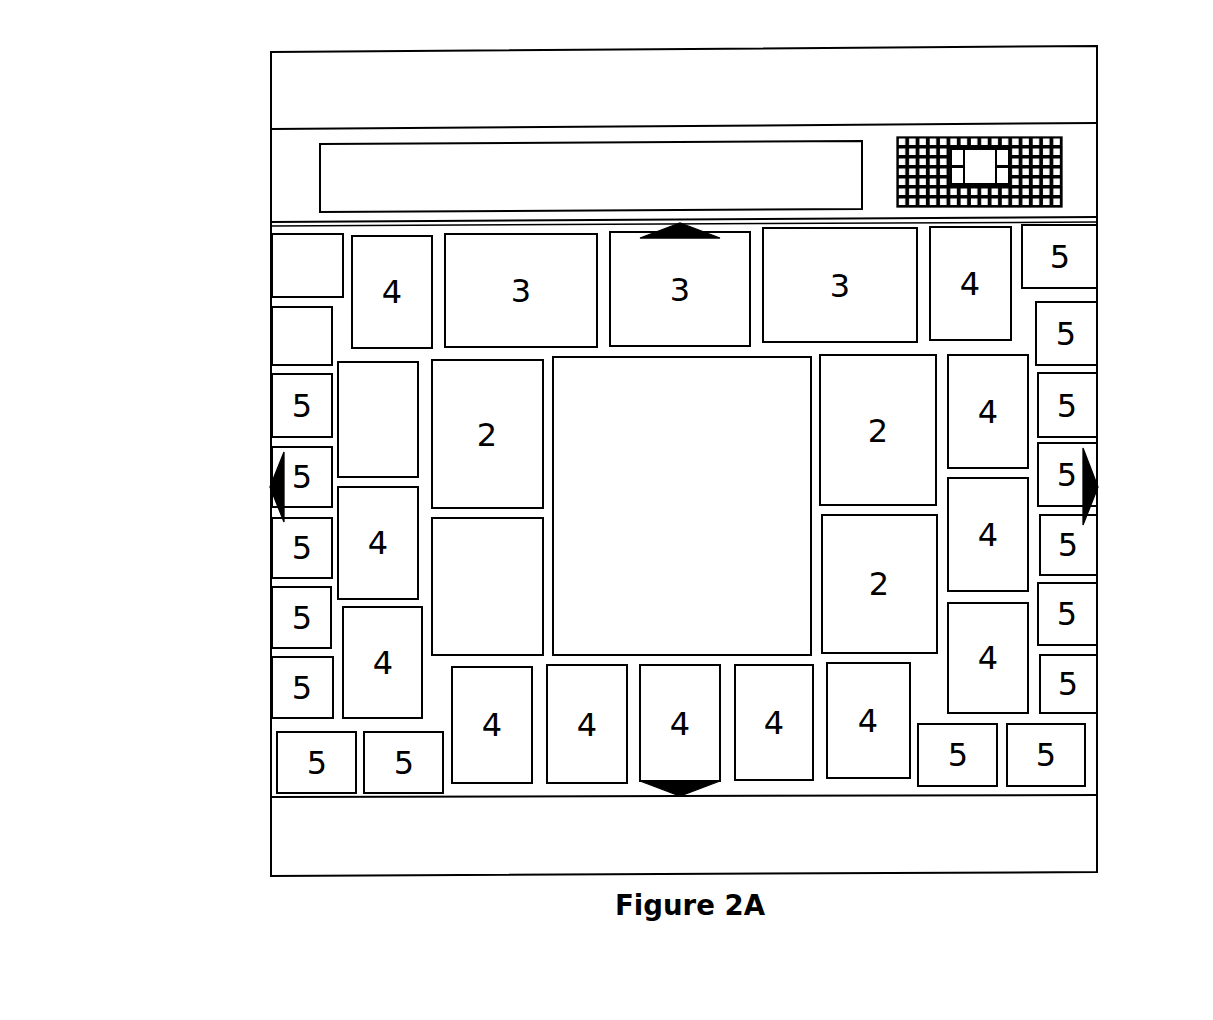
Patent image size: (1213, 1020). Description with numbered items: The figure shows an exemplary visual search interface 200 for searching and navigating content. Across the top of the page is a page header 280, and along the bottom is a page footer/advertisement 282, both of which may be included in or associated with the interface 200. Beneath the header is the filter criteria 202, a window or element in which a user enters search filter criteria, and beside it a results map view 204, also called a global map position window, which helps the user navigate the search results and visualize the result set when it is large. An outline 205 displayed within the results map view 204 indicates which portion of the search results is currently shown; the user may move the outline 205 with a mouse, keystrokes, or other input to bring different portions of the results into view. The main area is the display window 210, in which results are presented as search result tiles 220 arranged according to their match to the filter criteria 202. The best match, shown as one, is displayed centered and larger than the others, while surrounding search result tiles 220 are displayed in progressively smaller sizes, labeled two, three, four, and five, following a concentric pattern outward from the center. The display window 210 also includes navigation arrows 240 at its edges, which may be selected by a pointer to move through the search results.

The visual search interface 200 is at (212, 104).
The filter criteria 202 is at (320, 157).
The results map view 204 is at (1039, 154).
The outline 205 is at (1003, 137).
The display window 210 is at (260, 259).
The search result tiles 220 is at (292, 313).
The navigation arrows 240 is at (272, 487).
The page header 280 is at (1080, 56).
The page footer/advertisement 282 is at (1085, 820).